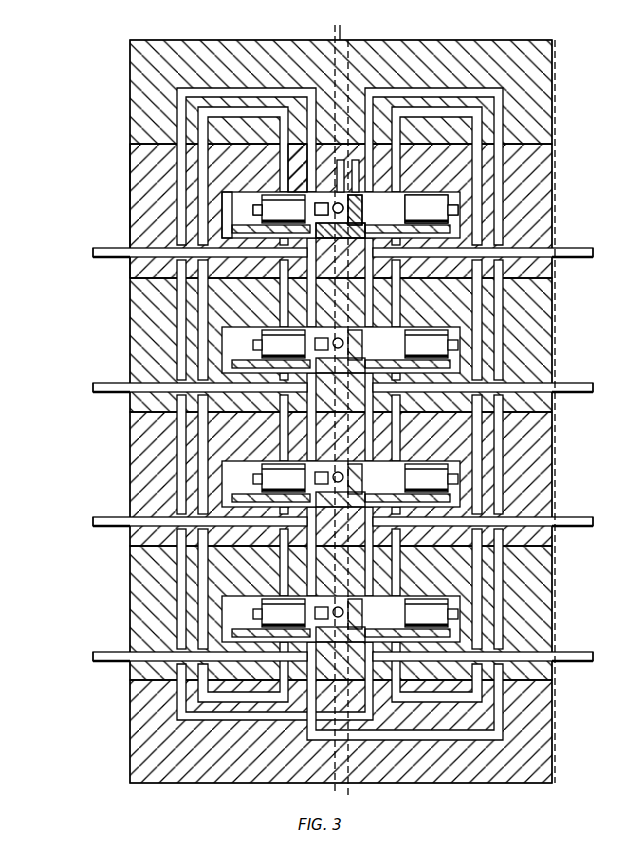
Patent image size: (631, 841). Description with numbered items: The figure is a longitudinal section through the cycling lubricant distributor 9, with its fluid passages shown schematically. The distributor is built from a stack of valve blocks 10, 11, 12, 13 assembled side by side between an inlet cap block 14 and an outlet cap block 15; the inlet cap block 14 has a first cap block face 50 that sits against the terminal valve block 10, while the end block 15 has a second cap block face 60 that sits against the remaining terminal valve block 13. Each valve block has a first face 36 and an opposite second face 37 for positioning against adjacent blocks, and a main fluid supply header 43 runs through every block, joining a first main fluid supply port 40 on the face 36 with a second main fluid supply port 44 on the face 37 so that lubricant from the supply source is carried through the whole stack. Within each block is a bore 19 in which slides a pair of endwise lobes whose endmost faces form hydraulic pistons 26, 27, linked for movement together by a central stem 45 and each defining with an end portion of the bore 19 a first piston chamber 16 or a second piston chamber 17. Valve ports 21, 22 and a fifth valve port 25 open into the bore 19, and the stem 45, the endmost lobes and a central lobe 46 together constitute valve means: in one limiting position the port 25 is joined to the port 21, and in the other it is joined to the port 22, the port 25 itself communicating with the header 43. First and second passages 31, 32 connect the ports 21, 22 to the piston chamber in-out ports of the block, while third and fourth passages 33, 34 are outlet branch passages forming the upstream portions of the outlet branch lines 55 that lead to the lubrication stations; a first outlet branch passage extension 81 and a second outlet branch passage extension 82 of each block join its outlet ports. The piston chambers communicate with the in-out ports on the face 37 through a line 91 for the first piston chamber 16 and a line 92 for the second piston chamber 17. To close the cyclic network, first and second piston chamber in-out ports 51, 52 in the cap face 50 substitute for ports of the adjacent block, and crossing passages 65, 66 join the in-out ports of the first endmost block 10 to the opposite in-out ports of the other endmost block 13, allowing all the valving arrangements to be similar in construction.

The cycling lubricant distributor 9 is at (118, 189).
The valve block 10 is at (558, 180).
The valve block 11 is at (545, 330).
The valve block 12 is at (545, 445).
The valve block 13 is at (545, 580).
The inlet cap block 14 is at (556, 83).
The outlet cap block 15 is at (545, 720).
The first piston chamber 16 is at (250, 200).
The second piston chamber 17 is at (455, 200).
The bore 19 is at (259, 323).
The valve port 21 is at (319, 237).
The valve port 22 is at (352, 175).
The fifth valve port 25 is at (340, 435).
The piston 26 is at (255, 214).
The piston 27 is at (452, 195).
The first passage 31 is at (290, 178).
The second passage 32 is at (395, 167).
The third passage 33 is at (280, 160).
The fourth passage 34 is at (405, 180).
The first face 36 is at (167, 130).
The second face 37 is at (160, 300).
The first main fluid supply port 40 is at (368, 90).
The fluid supply header 43 is at (336, 45).
The second main fluid supply port 44 is at (340, 672).
The central stem 45 is at (412, 197).
The central lobe 46 is at (344, 222).
The first cap block face 50 is at (152, 150).
The first piston chamber in-out port 51 is at (297, 88).
The second piston chamber in-out port 52 is at (397, 88).
The outlet branch lines 55 is at (100, 260).
The second cap block face 60 is at (162, 690).
The passage 65 is at (175, 226).
The passage 66 is at (556, 150).
The first outlet branch passage extension 81 is at (152, 248).
The second outlet branch passage extension 82 is at (548, 247).
The line 91 is at (311, 258).
The line 92 is at (368, 258).